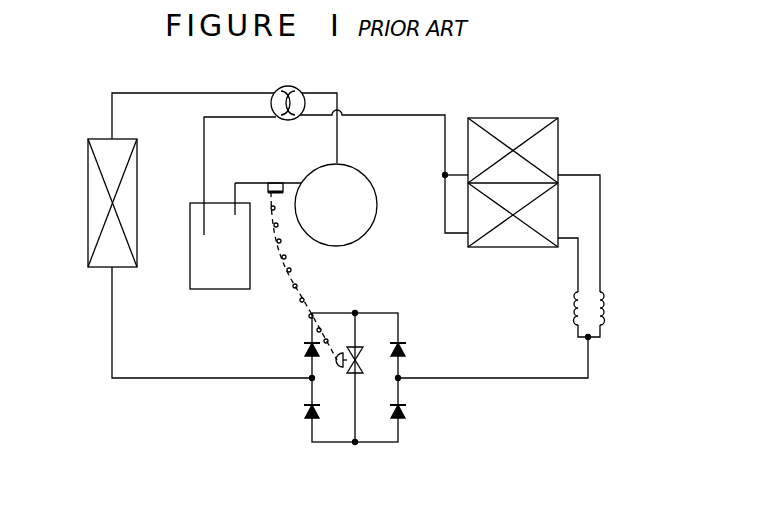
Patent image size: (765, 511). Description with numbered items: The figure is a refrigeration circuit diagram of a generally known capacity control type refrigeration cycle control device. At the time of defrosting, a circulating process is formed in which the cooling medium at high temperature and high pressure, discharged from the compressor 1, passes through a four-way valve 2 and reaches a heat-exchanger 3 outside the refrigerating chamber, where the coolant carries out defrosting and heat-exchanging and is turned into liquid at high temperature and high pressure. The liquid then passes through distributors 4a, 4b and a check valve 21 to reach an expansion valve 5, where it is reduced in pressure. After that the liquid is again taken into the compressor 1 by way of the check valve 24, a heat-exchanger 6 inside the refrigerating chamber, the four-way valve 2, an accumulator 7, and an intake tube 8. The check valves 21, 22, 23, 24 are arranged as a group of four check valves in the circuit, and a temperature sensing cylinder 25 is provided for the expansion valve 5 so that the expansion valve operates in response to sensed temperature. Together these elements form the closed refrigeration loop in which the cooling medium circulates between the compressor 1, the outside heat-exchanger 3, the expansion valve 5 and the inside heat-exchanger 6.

The compressor 1 is at (365, 202).
The four-way valve 2 is at (290, 86).
The heat-exchanger outside the refrigerating chamber 3 is at (508, 118).
The distributor 4a is at (572, 313).
The distributor 4b is at (608, 318).
The expansion valve 5 is at (361, 369).
The heat-exchanger inside the refrigerating chamber 6 is at (98, 222).
The accumulator 7 is at (227, 275).
The intake tube 8 is at (237, 183).
The check valve 21 is at (404, 349).
The check valve 22 is at (410, 412).
The check valve 23 is at (306, 347).
The check valve 24 is at (306, 414).
The temperature sensing cylinder 25 is at (272, 183).